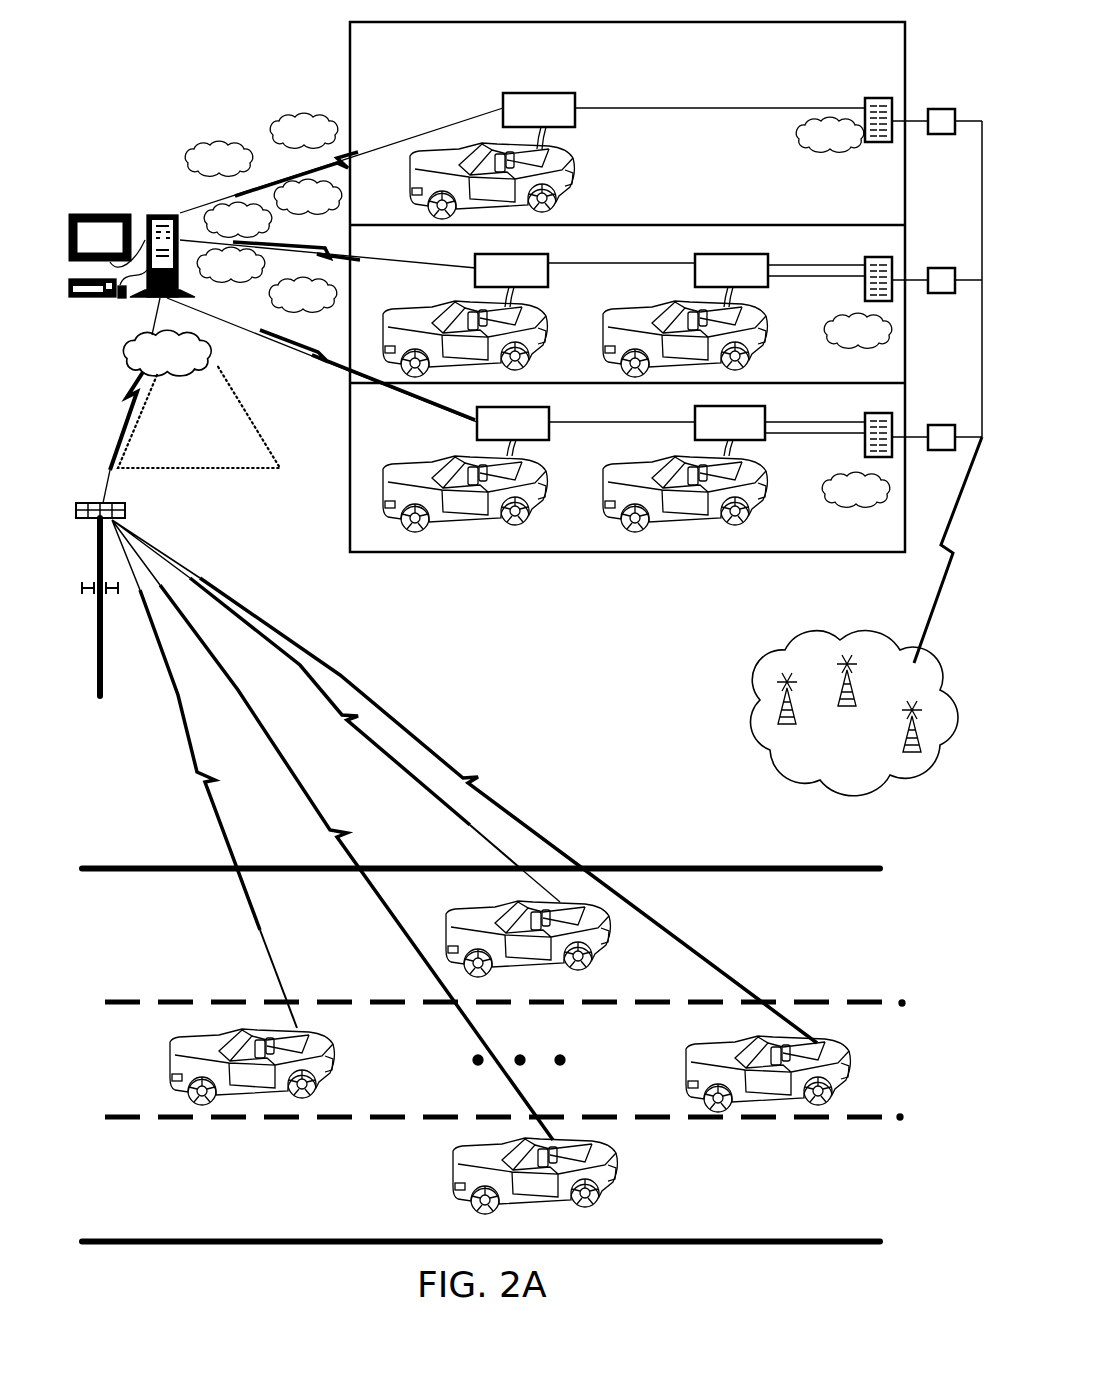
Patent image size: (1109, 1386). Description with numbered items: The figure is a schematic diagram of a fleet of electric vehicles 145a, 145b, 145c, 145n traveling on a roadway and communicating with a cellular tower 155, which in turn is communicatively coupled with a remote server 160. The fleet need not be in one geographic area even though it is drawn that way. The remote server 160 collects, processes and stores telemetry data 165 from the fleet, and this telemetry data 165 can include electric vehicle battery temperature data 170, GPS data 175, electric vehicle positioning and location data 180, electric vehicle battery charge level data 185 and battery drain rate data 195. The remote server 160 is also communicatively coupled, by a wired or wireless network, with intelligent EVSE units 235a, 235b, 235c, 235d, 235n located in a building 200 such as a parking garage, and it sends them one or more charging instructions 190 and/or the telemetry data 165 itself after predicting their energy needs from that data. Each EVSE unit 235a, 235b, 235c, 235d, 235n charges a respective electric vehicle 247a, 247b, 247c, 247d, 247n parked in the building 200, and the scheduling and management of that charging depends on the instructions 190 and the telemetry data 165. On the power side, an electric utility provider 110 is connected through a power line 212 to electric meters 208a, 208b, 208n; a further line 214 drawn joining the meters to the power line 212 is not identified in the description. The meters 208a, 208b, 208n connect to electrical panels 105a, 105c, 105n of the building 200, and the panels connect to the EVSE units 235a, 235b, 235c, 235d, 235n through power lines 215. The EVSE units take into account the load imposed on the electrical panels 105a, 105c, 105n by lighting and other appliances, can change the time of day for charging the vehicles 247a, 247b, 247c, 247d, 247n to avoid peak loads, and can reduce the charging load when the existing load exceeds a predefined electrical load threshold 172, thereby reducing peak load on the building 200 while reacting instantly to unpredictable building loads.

The building 200 is at (350, 80).
The remote server 160 is at (101, 213).
The telemetry data 165 is at (232, 244).
The charging instructions 190 is at (228, 211).
The electric vehicle battery temperature data 170 is at (195, 399).
The GPS data 175 is at (196, 424).
The electric vehicle positioning and location data 180 is at (149, 451).
The electric vehicle battery charge level data 185 is at (196, 451).
The battery drain rate data 195 is at (238, 451).
The cellular tower 155 is at (105, 630).
The electric vehicle 247a is at (455, 152).
The electric vehicle 247b is at (428, 310).
The electric vehicle 247c is at (648, 310).
The electric vehicle 247d is at (428, 465).
The electric vehicle 247n is at (648, 465).
The intelligent EVSE unit 235a is at (553, 93).
The intelligent EVSE unit 235b is at (530, 254).
The intelligent EVSE unit 235c is at (764, 243).
The intelligent EVSE unit 235d is at (519, 402).
The intelligent EVSE unit 235n is at (730, 402).
The power line 215 is at (770, 108).
The electrical panel 105a is at (865, 98).
The electrical panel 105c is at (865, 257).
The electrical panel 105n is at (865, 413).
The predefined electrical load threshold 172 is at (843, 312).
The electric meter 208a is at (937, 109).
The electric meter 208b is at (937, 268).
The electric meter 208n is at (937, 425).
The utility power bus 214 is at (982, 355).
The power line 212 is at (932, 612).
The electric utility provider 110 is at (762, 660).
The electric vehicle 145a is at (497, 893).
The electric vehicle 145b is at (215, 1036).
The electric vehicle 145c is at (731, 1043).
The electric vehicle 145n is at (498, 1145).